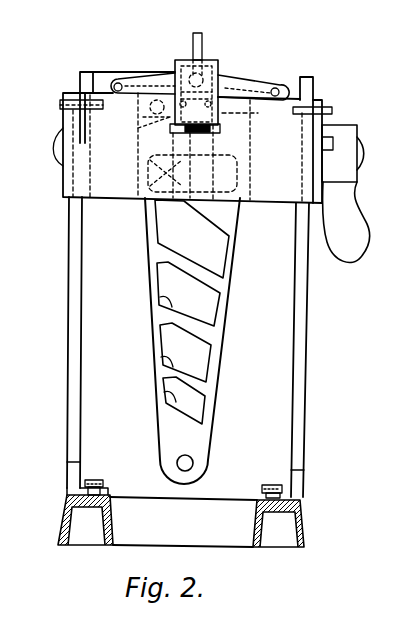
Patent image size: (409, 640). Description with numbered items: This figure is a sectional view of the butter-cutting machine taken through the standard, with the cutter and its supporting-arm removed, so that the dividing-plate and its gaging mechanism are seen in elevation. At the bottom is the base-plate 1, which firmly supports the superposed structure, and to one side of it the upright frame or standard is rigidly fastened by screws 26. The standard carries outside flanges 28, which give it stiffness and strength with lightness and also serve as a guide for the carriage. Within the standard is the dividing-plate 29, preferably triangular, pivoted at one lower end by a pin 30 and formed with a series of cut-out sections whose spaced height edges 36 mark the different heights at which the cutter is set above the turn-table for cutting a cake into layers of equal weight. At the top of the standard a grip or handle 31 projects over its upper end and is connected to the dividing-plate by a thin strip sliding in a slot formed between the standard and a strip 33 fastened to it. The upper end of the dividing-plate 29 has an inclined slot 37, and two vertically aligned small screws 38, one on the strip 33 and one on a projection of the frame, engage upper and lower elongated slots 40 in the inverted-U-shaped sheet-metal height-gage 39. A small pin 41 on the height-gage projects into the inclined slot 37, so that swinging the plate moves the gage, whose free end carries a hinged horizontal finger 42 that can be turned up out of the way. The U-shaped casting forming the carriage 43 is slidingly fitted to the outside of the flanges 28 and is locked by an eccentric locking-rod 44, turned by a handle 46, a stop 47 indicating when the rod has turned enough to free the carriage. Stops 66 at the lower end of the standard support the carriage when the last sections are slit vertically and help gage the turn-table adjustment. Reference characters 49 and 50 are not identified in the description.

The base-plate 1 is at (113, 525).
The screws 26 is at (97, 481).
The outside flanges 28 is at (75, 342).
The dividing-plate 29 is at (226, 314).
The pin 30 is at (193, 462).
The grip or handle 31 is at (203, 44).
The strip 33 is at (136, 80).
The height edges 36 is at (164, 395).
The inclined slot 37 is at (138, 128).
The small screws 38 is at (183, 58).
The height-gage 39 is at (233, 91).
The elongated slots 40 is at (200, 73).
The small pin 41 is at (222, 117).
The horizontal extension or finger 42 is at (220, 131).
The carriage 43 is at (146, 170).
The locking-rod 44 is at (363, 151).
The handle 46 is at (348, 222).
The stop 47 is at (333, 136).
The posts 49 is at (77, 118).
The clamp plates 50 is at (80, 100).
The stops 66 is at (75, 470).